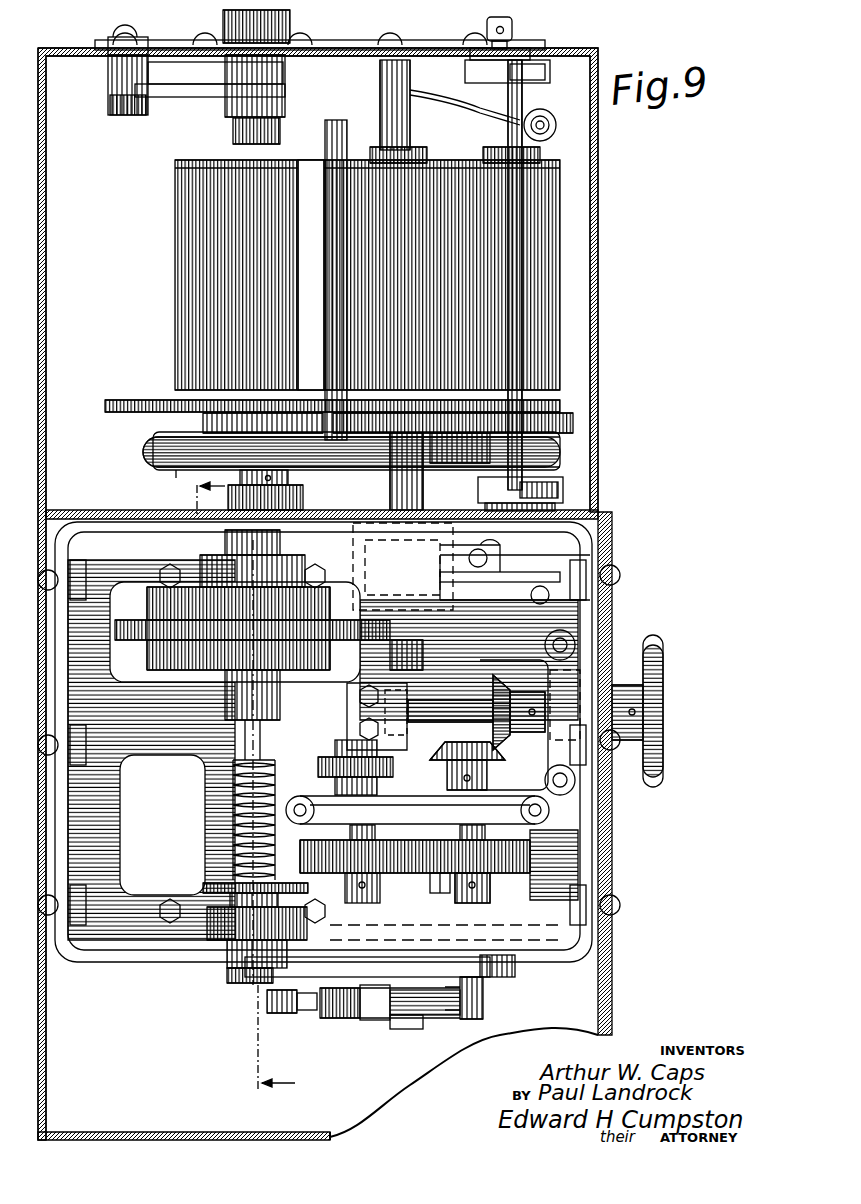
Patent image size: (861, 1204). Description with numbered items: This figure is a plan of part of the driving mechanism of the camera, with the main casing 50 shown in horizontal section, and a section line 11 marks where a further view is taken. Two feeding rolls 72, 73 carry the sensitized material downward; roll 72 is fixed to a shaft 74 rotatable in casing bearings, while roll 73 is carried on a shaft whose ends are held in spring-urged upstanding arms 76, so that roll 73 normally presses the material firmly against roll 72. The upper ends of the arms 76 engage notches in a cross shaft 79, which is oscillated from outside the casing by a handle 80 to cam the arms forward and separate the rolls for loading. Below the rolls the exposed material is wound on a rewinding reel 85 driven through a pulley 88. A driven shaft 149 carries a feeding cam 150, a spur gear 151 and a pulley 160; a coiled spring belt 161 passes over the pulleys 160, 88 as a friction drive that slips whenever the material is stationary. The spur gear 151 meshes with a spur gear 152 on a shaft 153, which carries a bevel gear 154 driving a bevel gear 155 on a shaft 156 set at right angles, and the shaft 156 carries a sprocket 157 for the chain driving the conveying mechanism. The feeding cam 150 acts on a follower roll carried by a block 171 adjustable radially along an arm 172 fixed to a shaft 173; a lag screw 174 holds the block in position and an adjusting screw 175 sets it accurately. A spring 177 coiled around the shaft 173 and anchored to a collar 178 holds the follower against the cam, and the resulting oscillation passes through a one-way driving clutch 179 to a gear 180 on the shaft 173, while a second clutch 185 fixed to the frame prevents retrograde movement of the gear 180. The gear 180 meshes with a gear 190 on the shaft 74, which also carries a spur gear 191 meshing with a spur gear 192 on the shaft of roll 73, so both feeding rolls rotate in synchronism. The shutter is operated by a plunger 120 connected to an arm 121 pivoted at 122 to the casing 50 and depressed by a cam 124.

The section line 11 is at (237, 793).
The main casing 50 is at (590, 50).
The feeding roll 72 is at (437, 170).
The feeding roll 73 is at (565, 235).
The shaft 74 is at (408, 138).
The upstanding arms 76 is at (548, 70).
The cross shaft 79 is at (522, 322).
The handle 80 is at (513, 33).
The rewinding reel 85 is at (145, 393).
The pulley 88 is at (176, 472).
The operating plunger 120 is at (543, 110).
The arm 121 is at (455, 92).
The pivot 122 is at (130, 116).
The cam 124 is at (386, 122).
The shaft 149 is at (334, 127).
The feeding cam 150 is at (290, 1014).
The spur gear 151 is at (380, 878).
The spur gear 152 is at (439, 894).
The shaft 153 is at (487, 904).
The bevel gear 154 is at (450, 758).
The bevel gear 155 is at (510, 740).
The shaft 156 is at (442, 702).
The sprocket 157 is at (663, 692).
The pulley 160 is at (290, 470).
The coiled spring belt 161 is at (143, 451).
The block 171 is at (385, 1020).
The arm 172 is at (255, 985).
The shaft 173 is at (250, 728).
The lag screw 174 is at (414, 1029).
The adjusting screw 175 is at (484, 1000).
The spring 177 is at (233, 808).
The collar 178 is at (212, 883).
The one-way driving clutch 179 is at (150, 645).
The gear 180 is at (128, 620).
The second clutch 185 is at (238, 628).
The gear 190 is at (455, 608).
The spur gear 191 is at (460, 437).
The spur gear 192 is at (574, 420).